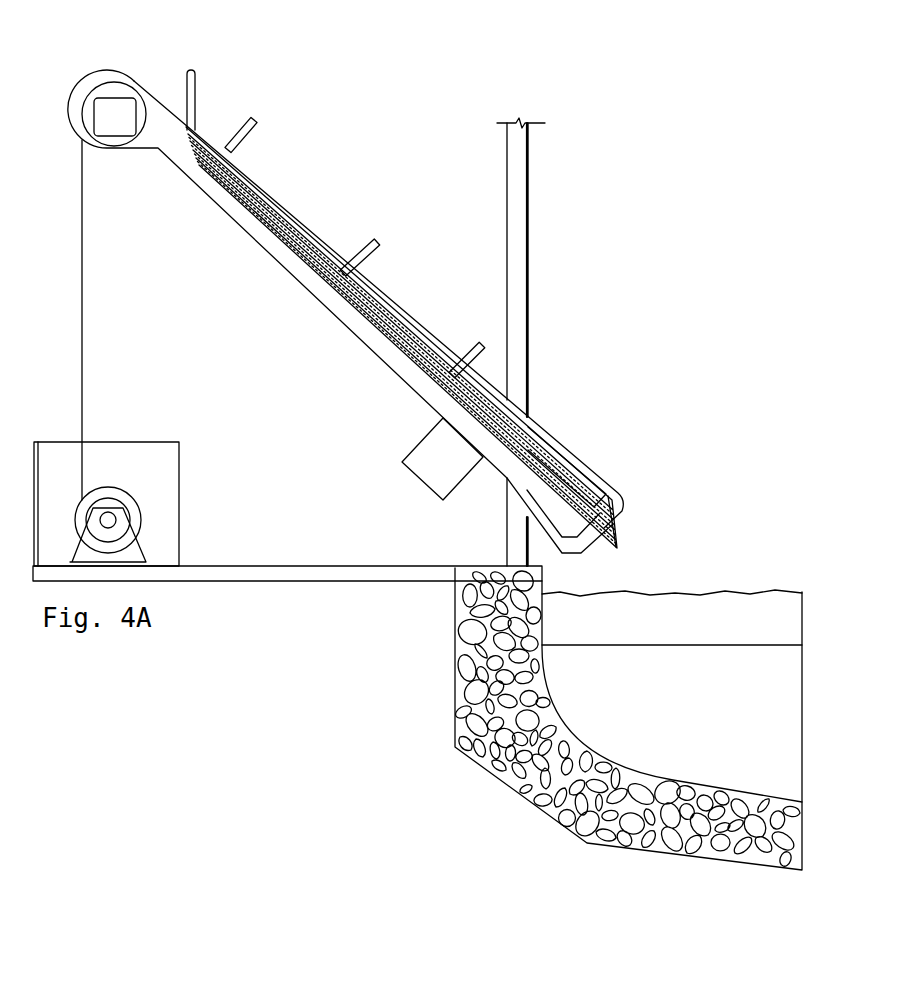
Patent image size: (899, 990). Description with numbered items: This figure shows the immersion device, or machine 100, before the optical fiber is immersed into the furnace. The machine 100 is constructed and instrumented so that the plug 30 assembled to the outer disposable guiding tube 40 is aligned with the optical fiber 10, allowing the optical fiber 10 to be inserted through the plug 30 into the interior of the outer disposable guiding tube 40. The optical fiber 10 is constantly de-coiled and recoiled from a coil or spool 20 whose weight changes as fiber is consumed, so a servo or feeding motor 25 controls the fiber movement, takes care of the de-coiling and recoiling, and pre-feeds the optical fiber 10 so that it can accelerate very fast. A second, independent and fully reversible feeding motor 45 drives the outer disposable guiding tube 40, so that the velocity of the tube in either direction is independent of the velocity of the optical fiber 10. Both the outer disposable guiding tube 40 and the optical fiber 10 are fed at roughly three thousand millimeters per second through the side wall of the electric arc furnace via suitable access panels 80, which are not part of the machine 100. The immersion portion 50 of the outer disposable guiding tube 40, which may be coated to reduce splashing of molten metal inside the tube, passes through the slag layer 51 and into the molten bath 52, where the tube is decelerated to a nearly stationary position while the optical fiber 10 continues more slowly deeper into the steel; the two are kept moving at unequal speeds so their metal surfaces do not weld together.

The machine 100 is at (225, 212).
The optical fiber 10 is at (193, 145).
The coil or spool 20 is at (130, 509).
The feeding motor 25 is at (120, 115).
The plug 30 is at (212, 163).
The outer disposable guiding tube 40 is at (353, 300).
The feeding motor 45 is at (440, 447).
The immersion portion 50 is at (618, 545).
The slag layer 51 is at (670, 617).
The molten bath 52 is at (723, 695).
The access panels 80 is at (572, 462).